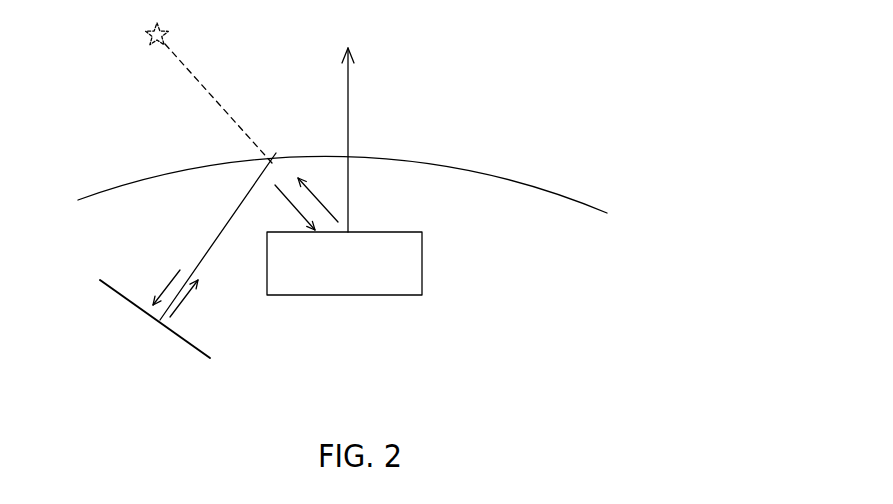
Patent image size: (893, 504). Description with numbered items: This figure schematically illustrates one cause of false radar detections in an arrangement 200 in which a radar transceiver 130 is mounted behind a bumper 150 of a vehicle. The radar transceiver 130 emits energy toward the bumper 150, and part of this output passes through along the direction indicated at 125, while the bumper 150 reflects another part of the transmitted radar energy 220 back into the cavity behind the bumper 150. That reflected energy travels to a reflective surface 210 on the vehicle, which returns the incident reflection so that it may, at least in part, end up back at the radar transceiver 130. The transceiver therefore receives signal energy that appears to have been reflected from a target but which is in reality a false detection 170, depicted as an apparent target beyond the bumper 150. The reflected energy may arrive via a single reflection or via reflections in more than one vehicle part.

The output beam 125 is at (367, 130).
The radar transceiver 130 is at (344, 263).
The bumper 150 is at (513, 175).
The false detection 170 is at (161, 61).
The system 200 is at (673, 105).
The reflective surface 210 is at (115, 292).
The transmitted radar energy 220 is at (214, 236).